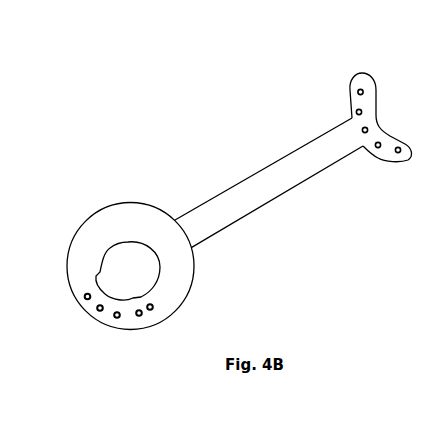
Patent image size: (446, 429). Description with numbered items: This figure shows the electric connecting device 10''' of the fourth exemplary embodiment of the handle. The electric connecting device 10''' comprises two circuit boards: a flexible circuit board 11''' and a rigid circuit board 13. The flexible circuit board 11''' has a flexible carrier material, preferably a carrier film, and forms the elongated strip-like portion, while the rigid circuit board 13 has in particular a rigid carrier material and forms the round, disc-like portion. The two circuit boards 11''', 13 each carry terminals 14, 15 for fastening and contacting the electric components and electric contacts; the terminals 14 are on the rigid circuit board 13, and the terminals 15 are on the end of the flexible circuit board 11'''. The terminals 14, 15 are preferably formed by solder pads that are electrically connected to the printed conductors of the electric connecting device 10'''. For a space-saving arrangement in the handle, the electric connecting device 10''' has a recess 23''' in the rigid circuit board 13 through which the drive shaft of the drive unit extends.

The electric connecting device 10''' is at (159, 60).
The flexible circuit board 11''' is at (269, 183).
The rigid circuit board 13 is at (95, 227).
The terminals 14 is at (80, 283).
The terminals 15 is at (355, 123).
The recess 23''' is at (167, 279).